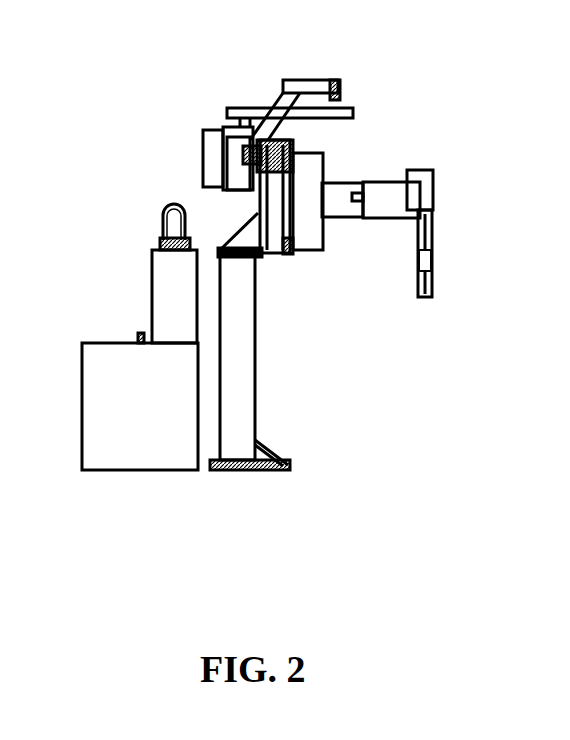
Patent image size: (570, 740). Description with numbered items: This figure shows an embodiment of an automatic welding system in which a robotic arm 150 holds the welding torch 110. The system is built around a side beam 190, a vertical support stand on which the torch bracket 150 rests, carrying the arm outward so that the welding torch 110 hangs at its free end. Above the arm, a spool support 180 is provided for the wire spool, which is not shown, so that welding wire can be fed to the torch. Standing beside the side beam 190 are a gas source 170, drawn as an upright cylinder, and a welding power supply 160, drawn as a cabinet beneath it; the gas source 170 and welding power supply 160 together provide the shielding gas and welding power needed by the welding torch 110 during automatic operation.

The welding torch 110 is at (440, 265).
The robotic arm 150 is at (410, 143).
The welding power supply 160 is at (103, 340).
The gas source 170 is at (150, 250).
The spool support 180 is at (336, 72).
The side beam 190 is at (220, 250).